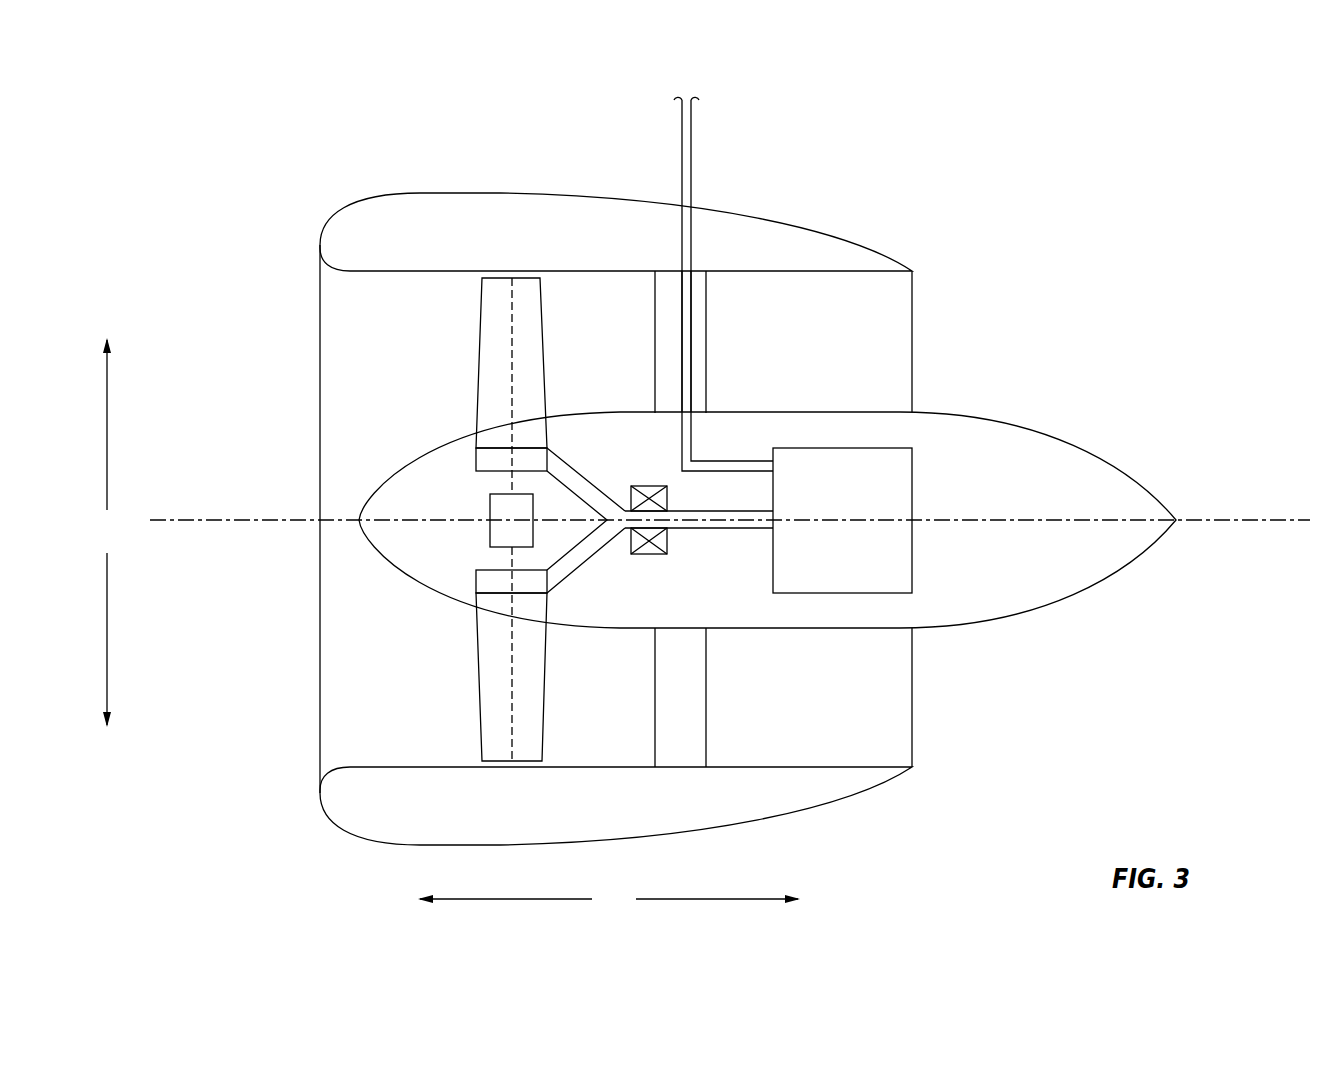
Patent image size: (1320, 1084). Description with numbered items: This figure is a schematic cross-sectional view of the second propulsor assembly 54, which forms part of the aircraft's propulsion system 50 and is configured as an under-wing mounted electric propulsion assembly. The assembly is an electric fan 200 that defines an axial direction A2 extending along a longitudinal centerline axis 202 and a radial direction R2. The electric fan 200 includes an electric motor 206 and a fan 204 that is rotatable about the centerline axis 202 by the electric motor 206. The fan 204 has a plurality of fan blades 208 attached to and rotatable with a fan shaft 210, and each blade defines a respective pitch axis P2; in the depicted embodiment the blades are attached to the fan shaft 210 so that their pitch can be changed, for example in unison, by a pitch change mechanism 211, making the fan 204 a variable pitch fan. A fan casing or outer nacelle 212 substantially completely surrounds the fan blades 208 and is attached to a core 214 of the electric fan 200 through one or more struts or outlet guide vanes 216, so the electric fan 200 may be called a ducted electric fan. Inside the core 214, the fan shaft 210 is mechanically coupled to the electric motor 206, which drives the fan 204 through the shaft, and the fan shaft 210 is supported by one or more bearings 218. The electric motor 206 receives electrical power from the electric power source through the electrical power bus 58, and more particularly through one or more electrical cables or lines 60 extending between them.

The electric fan 200 is at (386, 127).
The propulsion system 50 is at (986, 239).
The second propulsor assembly 54 is at (604, 165).
The electrical power bus 58 is at (742, 150).
The electrical cables or lines 60 is at (692, 372).
The longitudinal centerline axis 202 is at (1232, 520).
The fan 204 is at (369, 352).
The electric motor 206 is at (912, 505).
The fan blades 208 is at (476, 420).
The fan shaft 210 is at (680, 530).
The pitch change mechanism 211 is at (490, 535).
The outer nacelle 212 is at (772, 220).
The core 214 is at (1007, 420).
The struts or outlet guide vanes 216 is at (707, 728).
The bearings 218 is at (645, 486).
The pitch axis P2 is at (513, 347).
The radial direction R2 is at (110, 532).
The axial direction A2 is at (609, 903).